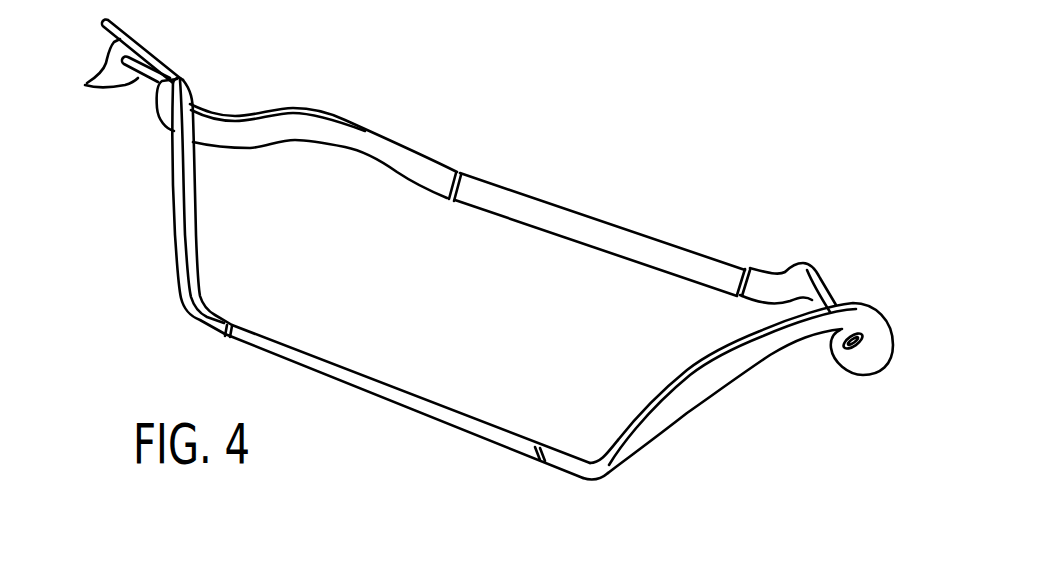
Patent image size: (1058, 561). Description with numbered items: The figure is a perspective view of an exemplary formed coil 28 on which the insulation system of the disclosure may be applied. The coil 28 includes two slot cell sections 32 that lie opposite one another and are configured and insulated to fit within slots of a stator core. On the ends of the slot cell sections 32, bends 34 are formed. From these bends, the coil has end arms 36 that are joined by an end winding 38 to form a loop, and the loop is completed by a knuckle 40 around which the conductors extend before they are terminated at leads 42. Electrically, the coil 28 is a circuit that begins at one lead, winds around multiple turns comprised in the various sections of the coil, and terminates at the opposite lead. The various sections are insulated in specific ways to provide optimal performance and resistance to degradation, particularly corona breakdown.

The coil 28 is at (502, 269).
The slot cell sections 32 is at (575, 223).
The bends 34 is at (370, 142).
The end arms 36 is at (718, 387).
The end winding 38 is at (845, 320).
The knuckle 40 is at (207, 130).
The leads 42 is at (116, 61).